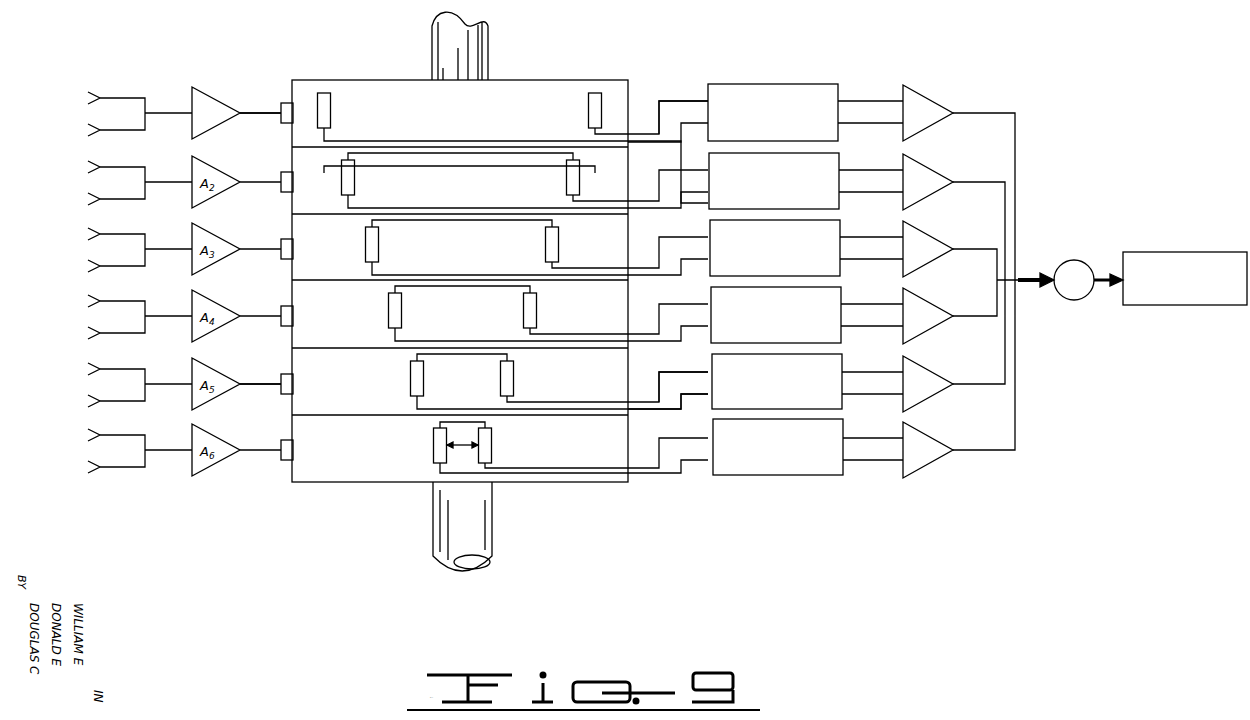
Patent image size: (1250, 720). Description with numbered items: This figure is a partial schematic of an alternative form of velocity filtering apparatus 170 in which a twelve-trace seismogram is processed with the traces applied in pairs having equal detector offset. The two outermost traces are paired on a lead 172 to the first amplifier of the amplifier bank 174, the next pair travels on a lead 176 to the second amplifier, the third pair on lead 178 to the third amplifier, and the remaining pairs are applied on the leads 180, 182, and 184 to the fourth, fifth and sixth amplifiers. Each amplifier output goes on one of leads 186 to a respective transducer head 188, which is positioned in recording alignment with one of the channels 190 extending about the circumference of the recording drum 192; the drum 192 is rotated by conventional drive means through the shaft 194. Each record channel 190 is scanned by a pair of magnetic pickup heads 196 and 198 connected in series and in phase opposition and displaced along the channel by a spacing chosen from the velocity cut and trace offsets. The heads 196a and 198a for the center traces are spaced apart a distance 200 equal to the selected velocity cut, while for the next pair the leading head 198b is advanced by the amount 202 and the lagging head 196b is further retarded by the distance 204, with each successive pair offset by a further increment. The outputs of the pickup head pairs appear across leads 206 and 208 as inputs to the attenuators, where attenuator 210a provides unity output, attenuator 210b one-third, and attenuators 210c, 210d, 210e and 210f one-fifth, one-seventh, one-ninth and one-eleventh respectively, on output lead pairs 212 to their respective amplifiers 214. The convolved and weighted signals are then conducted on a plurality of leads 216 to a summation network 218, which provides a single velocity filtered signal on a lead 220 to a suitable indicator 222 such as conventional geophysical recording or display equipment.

The velocity filtering apparatus 170 is at (589, 76).
The lead 172 is at (173, 116).
The amplifier bank 174 is at (212, 91).
The lead 176 is at (173, 185).
The lead 178 is at (173, 252).
The lead 180 is at (171, 319).
The lead 182 is at (178, 387).
The lead 184 is at (173, 453).
The leads 186 is at (268, 110).
The transducer head 188 is at (285, 100).
The channel 190 is at (302, 88).
The recording drum 192 is at (408, 80).
The shaft 194 is at (468, 46).
The magnetic pickup head 196 is at (331, 113).
The magnetic pickup head 198 is at (590, 110).
The pickup head 196b is at (410, 379).
The pickup head 198b is at (514, 378).
The pickup head 196a is at (433, 452).
The pickup head 198a is at (496, 453).
The distance 200 is at (466, 444).
The amount 202 is at (500, 378).
The distance 204 is at (424, 380).
The lead 206 is at (684, 108).
The lead 208 is at (686, 140).
The attenuator 210a is at (843, 428).
The attenuator 210b is at (842, 362).
The attenuator 210c is at (841, 294).
The attenuator 210d is at (840, 226).
The attenuator 210e is at (840, 158).
The attenuator 210f is at (840, 90).
The output lead pairs 212 is at (846, 97).
The amplifiers 214 is at (932, 100).
The leads 216 is at (1016, 123).
The summation network 218 is at (1076, 261).
The lead 220 is at (1103, 298).
The indicator 222 is at (1174, 256).